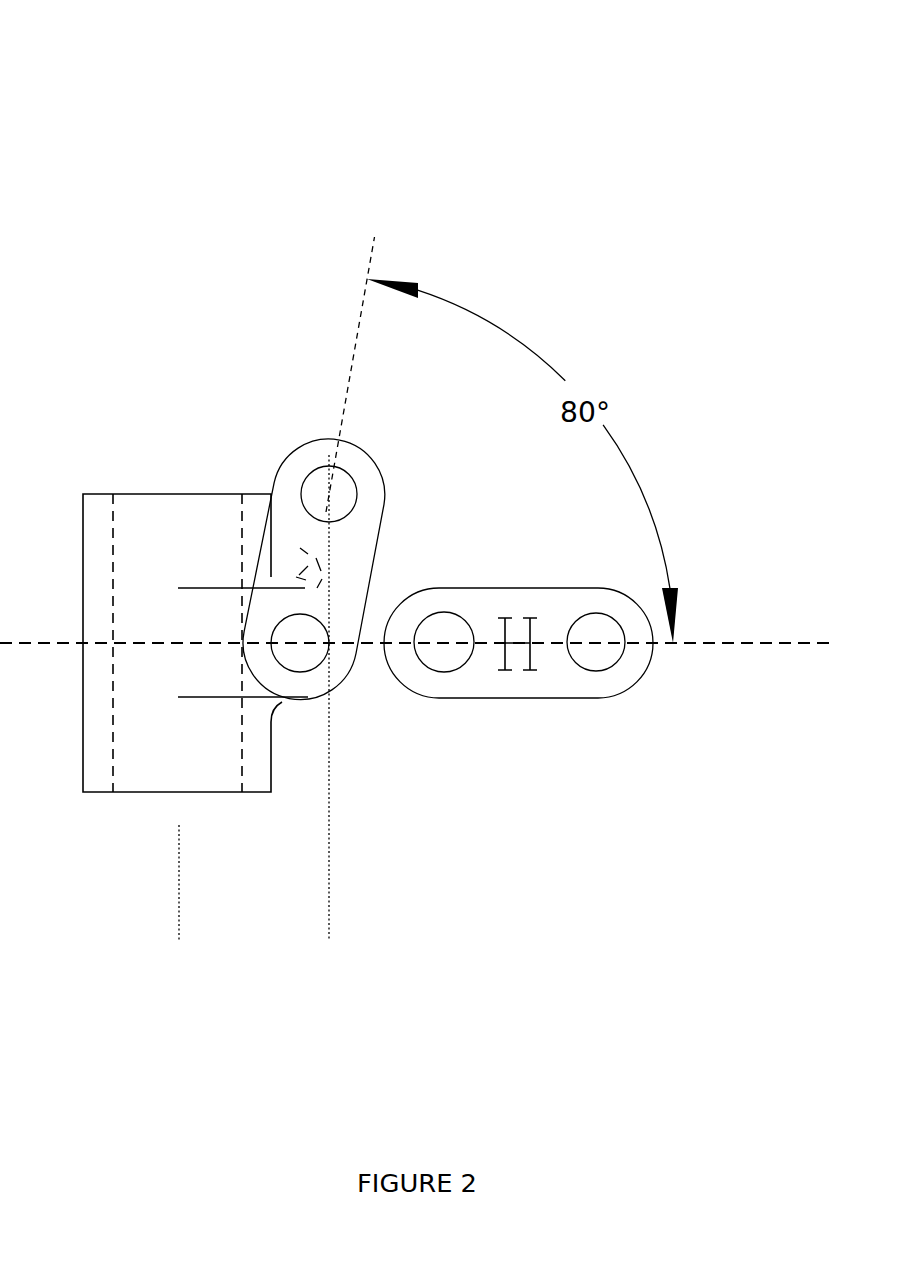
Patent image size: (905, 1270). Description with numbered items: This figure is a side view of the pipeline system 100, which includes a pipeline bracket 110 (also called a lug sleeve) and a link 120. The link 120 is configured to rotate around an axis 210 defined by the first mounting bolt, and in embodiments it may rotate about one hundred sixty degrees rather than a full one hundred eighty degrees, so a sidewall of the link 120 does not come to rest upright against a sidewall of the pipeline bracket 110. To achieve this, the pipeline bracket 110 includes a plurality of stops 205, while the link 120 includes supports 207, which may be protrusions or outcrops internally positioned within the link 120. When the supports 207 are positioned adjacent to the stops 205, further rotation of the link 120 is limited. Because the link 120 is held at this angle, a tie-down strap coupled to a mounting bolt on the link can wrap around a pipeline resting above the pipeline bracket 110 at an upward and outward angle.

The pipeline system 100 is at (152, 144).
The pipeline bracket 110 is at (187, 549).
The link 120 is at (318, 450).
The stops 205 is at (269, 580).
The supports 207 is at (334, 563).
The axis 210 is at (283, 647).